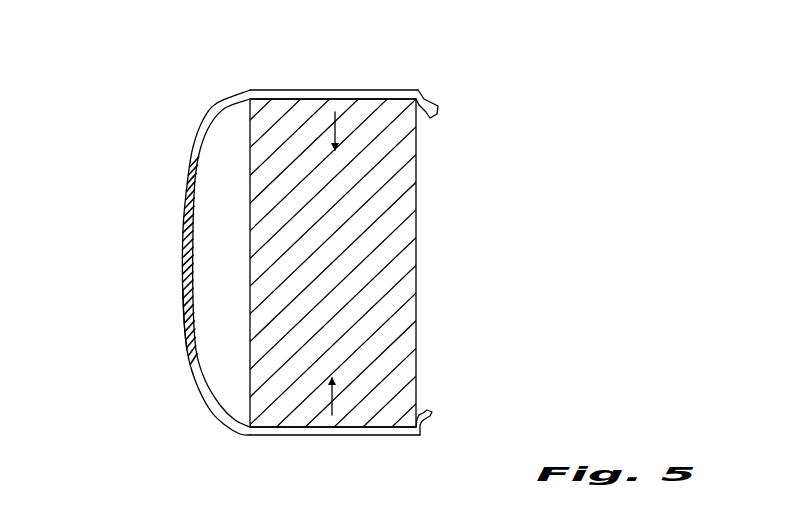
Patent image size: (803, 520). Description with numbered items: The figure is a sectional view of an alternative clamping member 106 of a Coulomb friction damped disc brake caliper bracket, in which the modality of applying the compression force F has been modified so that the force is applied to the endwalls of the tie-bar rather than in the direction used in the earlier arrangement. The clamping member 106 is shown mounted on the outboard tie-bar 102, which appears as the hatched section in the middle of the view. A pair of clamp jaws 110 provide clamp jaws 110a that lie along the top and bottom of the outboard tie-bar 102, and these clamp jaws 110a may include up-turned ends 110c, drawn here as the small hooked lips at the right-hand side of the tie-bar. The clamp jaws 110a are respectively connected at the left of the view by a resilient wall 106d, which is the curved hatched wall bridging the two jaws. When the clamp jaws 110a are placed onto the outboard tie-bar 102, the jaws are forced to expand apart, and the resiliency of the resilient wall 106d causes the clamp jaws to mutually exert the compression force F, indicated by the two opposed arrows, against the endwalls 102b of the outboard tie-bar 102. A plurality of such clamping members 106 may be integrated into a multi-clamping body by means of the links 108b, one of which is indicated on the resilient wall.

The outboard tie-bar 102 is at (418, 256).
The endwalls 102b is at (292, 99).
The clamp jaws 110a is at (340, 90).
The up-turned ends 110c is at (423, 118).
The clamping member 106 is at (218, 100).
The clamp jaws 110 is at (267, 90).
The resilient wall 106d is at (182, 232).
The links 108b is at (181, 303).
The compression force F is at (335, 130).